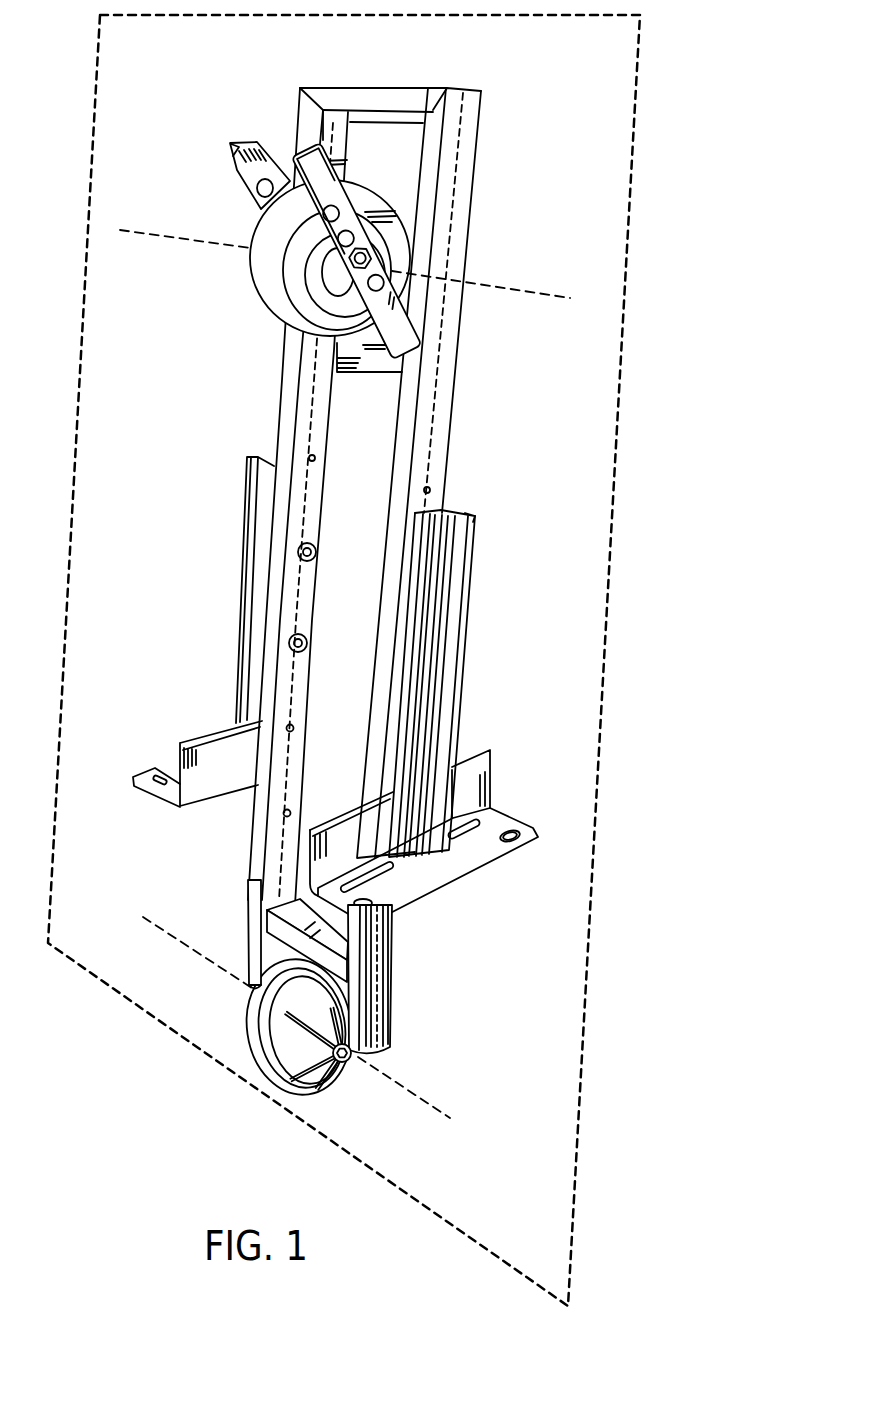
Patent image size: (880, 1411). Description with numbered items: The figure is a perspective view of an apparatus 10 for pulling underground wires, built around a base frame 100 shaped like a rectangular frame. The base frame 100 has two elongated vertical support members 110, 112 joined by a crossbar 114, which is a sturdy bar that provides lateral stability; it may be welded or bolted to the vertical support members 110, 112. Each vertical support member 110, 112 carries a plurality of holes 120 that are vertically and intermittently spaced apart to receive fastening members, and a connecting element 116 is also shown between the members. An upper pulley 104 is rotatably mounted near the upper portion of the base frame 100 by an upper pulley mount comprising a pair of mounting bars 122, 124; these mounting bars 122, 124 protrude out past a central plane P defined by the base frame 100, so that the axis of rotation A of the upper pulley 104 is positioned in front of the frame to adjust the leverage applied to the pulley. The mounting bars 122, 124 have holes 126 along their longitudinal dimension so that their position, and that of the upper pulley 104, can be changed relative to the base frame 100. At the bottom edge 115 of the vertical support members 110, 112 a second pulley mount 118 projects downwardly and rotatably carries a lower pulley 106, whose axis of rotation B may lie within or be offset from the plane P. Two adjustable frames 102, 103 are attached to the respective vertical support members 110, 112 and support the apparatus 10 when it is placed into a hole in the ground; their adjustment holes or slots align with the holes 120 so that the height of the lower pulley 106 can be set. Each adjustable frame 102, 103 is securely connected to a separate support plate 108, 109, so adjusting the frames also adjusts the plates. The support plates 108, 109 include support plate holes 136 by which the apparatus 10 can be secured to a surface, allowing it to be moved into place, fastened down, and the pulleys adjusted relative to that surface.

The apparatus 10 is at (118, 905).
The central plane P is at (643, 80).
The base frame 100 is at (516, 126).
The adjustable frame 102 is at (460, 688).
The adjustable frame 103 is at (257, 511).
The upper pulley 104 is at (265, 285).
The lower pulley 106 is at (262, 1082).
The support plate 108 is at (440, 878).
The support plate 109 is at (197, 798).
The vertical support member 110 is at (463, 228).
The vertical support member 112 is at (298, 118).
The crossbar 114 is at (380, 95).
The bottom edge 115 is at (243, 977).
The connector plate 116 is at (368, 374).
The second pulley mount 118 is at (335, 1072).
The holes 120 is at (300, 456).
The mounting bar 122 is at (353, 182).
The mounting bar 124 is at (238, 142).
The holes 126 is at (256, 188).
The support plate holes 136 is at (150, 772).
The axis of rotation A is at (550, 296).
The axis of rotation B is at (430, 1110).